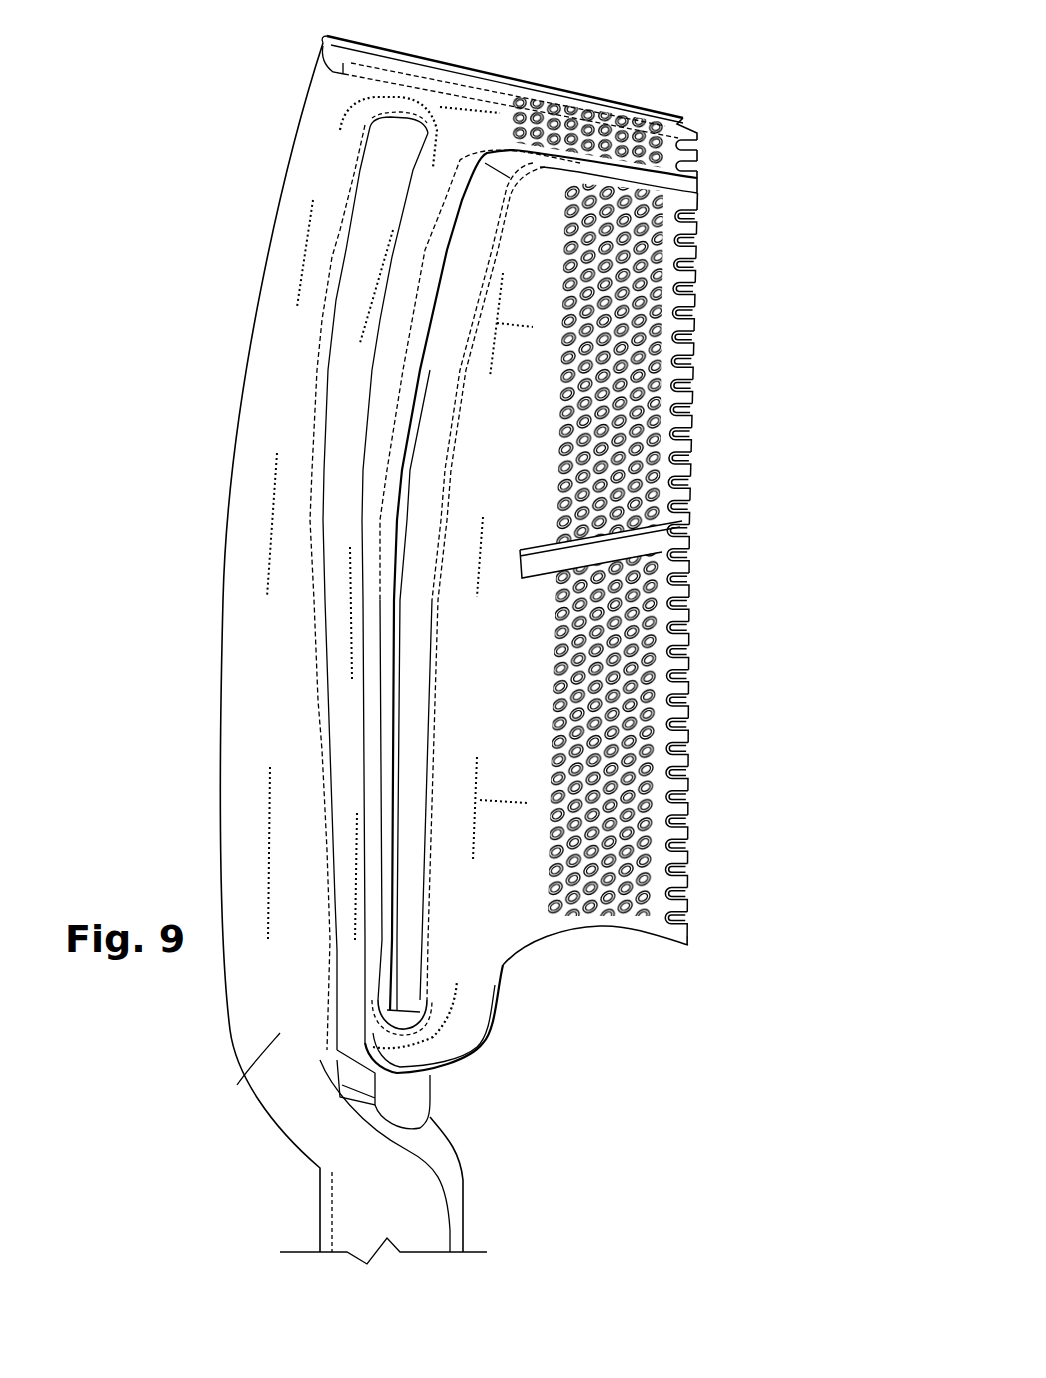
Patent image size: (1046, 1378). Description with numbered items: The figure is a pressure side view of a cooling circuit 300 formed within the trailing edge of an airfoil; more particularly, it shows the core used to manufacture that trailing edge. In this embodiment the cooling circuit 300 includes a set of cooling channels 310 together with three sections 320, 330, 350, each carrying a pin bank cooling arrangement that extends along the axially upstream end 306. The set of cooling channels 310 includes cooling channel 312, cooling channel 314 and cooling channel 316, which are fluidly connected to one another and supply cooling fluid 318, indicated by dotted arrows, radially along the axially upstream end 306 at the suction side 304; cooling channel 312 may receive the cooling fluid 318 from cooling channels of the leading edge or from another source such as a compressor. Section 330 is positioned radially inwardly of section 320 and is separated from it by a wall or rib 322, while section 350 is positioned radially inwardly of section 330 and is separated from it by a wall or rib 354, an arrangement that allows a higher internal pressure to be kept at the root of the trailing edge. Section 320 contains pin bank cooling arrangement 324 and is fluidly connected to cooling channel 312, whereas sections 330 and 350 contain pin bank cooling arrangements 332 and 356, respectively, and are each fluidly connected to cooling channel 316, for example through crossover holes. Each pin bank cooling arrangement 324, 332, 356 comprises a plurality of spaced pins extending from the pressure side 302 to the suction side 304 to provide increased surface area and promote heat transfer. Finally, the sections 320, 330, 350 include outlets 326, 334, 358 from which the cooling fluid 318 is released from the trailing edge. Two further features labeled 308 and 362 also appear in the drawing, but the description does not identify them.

The cooling circuit 300 is at (148, 103).
The pressure side 302 is at (307, 182).
The suction side 304 is at (490, 68).
The axially upstream end 306 is at (310, 38).
The upper attachment region 308 is at (627, 52).
The set of cooling channels 310 is at (265, 1145).
The cooling channel 312 is at (280, 1033).
The cooling channel 314 is at (373, 1000).
The cooling channel 316 is at (467, 975).
The cooling fluid 318 is at (447, 1050).
The section 320 is at (684, 108).
The wall (or rib) 322 is at (697, 178).
The pin bank cooling arrangement 324 is at (613, 120).
The outlets 326 is at (700, 144).
The section 330 is at (720, 298).
The pin bank cooling arrangement 332 is at (627, 320).
The outlets 334 is at (693, 397).
The section 350 is at (758, 646).
The wall (or rib) 354 is at (647, 538).
The pin bank cooling arrangement 356 is at (615, 672).
The outlets 358 is at (675, 698).
The corner recess 362 is at (318, 47).